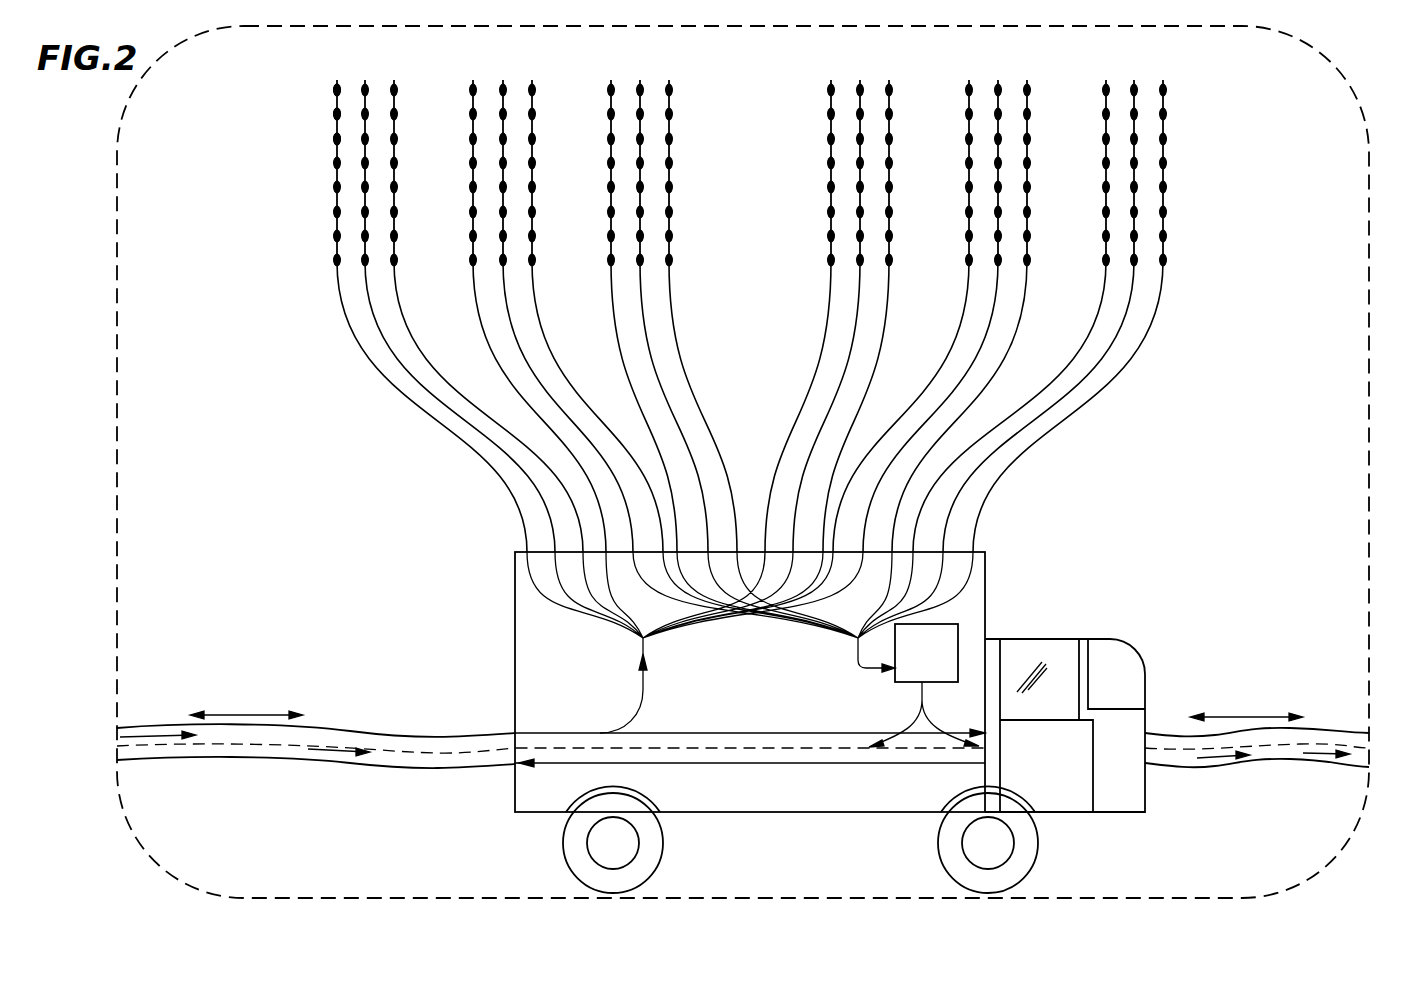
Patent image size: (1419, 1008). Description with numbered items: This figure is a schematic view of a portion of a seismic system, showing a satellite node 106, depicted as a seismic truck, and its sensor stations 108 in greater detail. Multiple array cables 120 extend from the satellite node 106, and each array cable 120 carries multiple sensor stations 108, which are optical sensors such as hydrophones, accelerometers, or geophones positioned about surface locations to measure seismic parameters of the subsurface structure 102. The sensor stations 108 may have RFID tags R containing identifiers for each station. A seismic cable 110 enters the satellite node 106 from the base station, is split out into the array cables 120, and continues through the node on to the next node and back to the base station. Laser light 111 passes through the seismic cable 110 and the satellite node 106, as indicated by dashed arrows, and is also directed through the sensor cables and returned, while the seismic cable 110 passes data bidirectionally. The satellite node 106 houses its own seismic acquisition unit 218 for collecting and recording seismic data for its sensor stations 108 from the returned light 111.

The subsurface structure 102 is at (748, 96).
The satellite node 106 is at (515, 578).
The sensor stations 108 is at (473, 113).
The radio frequency identification (RFID) tags R is at (337, 139).
The array cables 120 is at (523, 350).
The seismic cable 110 is at (140, 728).
The laser light 111 is at (383, 756).
The seismic acquisition unit 218 is at (950, 665).